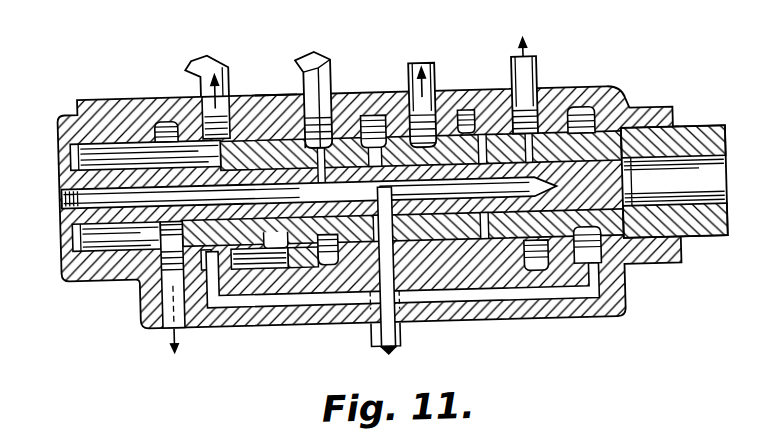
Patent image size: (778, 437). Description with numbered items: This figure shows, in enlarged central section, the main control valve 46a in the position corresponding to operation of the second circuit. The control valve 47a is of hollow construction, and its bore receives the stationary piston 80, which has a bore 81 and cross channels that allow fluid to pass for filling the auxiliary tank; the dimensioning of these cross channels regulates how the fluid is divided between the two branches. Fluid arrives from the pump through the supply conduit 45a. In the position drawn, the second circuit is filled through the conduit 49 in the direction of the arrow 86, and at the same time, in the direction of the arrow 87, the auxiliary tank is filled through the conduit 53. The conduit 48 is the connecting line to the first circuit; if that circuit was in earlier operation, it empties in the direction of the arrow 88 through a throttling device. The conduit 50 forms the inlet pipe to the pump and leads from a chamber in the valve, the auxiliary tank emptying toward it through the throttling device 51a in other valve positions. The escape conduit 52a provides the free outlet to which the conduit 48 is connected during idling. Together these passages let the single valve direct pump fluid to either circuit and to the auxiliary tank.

The conduit 50 is at (215, 52).
The conduit 48 is at (328, 50).
The main control valve 46a is at (277, 92).
The arrow 88 is at (336, 80).
The conduit 49 is at (385, 275).
The arrow 86 is at (440, 70).
The arrow 87 is at (516, 35).
The conduit 53 is at (541, 60).
The control valve 47a is at (145, 156).
The bore 81 is at (372, 190).
The stationary piston 80 is at (674, 181).
The escape conduit 52a is at (163, 326).
The throttling device 51a is at (196, 322).
The supply conduit 45a is at (400, 340).